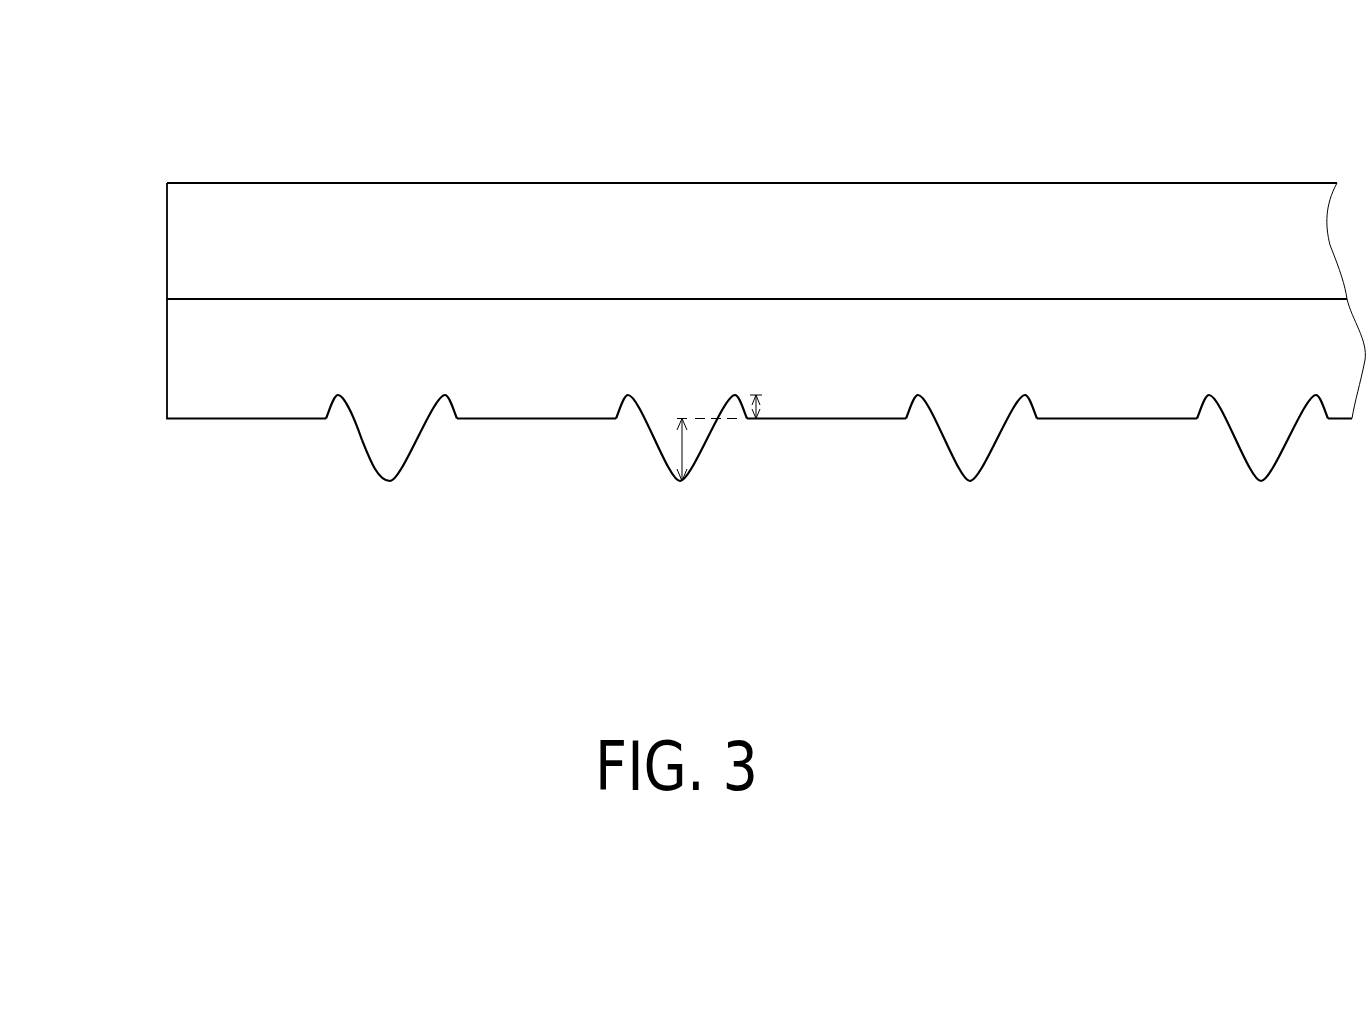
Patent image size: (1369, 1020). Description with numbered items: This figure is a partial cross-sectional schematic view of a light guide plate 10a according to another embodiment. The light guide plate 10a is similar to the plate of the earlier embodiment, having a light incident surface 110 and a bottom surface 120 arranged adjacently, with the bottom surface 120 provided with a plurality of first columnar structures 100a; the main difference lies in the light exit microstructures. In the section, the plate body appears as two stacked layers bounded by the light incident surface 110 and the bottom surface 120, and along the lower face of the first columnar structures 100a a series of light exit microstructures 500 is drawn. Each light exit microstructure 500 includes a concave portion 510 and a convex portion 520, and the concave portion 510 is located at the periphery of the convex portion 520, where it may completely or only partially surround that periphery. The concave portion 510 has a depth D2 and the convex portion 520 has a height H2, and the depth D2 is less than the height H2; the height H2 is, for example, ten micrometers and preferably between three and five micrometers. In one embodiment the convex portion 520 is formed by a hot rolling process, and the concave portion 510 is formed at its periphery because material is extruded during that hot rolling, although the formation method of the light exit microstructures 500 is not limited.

The light guide plate 10a is at (80, 107).
The light incident surface 110 is at (167, 242).
The bottom surface 120 is at (210, 300).
The first columnar structures 100a is at (200, 370).
The light exit microstructure 500 is at (420, 542).
The concave portion 510 is at (340, 418).
The convex portion 520 is at (390, 483).
The height H2 is at (683, 457).
The depth D2 is at (759, 407).